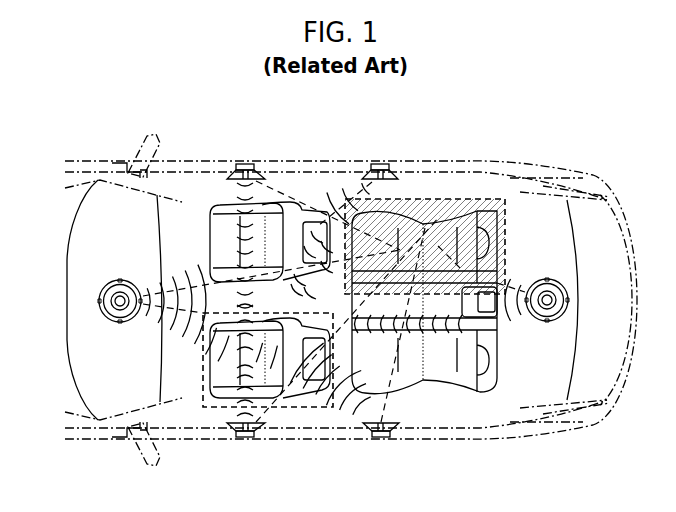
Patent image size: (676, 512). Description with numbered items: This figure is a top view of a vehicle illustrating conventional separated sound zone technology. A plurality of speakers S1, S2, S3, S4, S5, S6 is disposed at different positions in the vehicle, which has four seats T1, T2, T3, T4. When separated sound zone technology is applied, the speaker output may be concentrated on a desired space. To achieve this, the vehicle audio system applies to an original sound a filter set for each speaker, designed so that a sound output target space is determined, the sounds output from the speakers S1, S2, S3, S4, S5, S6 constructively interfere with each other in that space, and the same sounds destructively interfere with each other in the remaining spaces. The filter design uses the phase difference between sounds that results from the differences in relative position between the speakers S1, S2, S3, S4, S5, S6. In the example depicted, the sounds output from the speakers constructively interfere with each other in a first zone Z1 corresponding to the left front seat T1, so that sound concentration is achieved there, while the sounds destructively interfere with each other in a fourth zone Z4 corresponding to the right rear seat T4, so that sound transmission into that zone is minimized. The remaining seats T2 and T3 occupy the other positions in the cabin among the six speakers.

The speaker S1 is at (98, 301).
The speaker S2 is at (246, 163).
The speaker S3 is at (380, 163).
The speaker S4 is at (566, 294).
The speaker S5 is at (380, 438).
The speaker S6 is at (245, 438).
The left front seat T1 is at (283, 398).
The seat T2 is at (286, 205).
The seat T3 is at (447, 393).
The right rear seat T4 is at (445, 212).
The first zone Z1 is at (212, 407).
The fourth zone Z4 is at (496, 199).